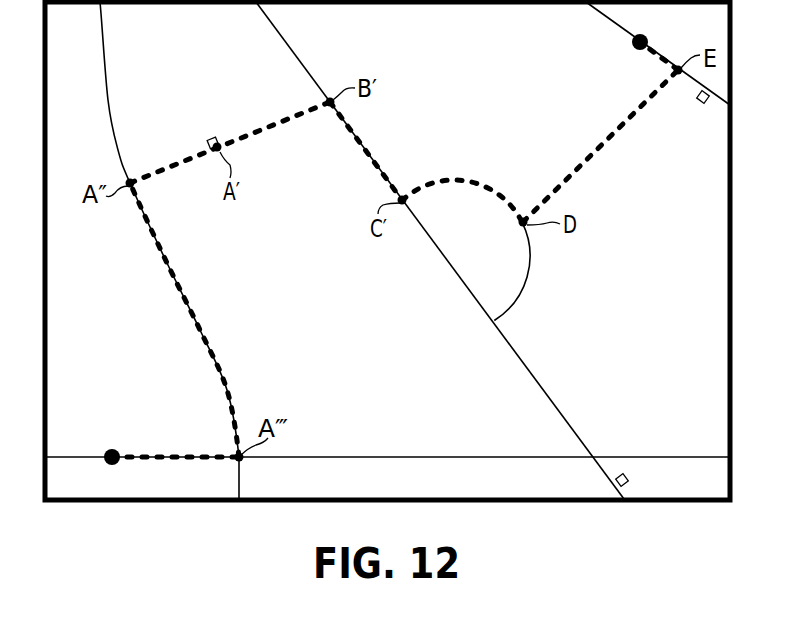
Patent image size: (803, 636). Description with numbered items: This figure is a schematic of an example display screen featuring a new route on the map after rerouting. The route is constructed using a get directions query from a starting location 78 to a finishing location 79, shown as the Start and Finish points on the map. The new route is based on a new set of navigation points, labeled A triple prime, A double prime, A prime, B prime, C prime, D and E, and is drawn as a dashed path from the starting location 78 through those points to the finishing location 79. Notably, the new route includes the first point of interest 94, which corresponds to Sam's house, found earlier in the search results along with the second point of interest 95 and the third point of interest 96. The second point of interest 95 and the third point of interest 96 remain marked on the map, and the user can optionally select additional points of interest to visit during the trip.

The starting location 78 is at (143, 442).
The finishing location 79 is at (612, 52).
The first point of interest 94 is at (208, 143).
The second point of interest 95 is at (623, 475).
The third point of interest 96 is at (700, 103).